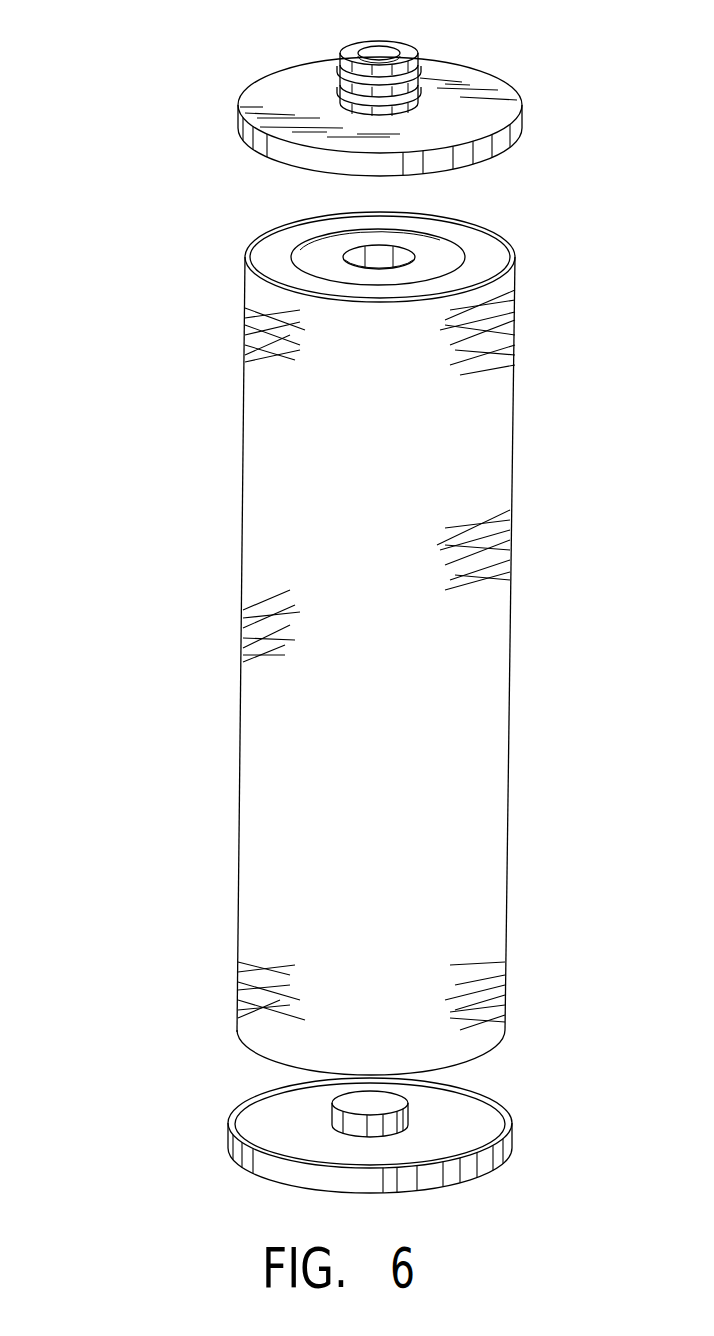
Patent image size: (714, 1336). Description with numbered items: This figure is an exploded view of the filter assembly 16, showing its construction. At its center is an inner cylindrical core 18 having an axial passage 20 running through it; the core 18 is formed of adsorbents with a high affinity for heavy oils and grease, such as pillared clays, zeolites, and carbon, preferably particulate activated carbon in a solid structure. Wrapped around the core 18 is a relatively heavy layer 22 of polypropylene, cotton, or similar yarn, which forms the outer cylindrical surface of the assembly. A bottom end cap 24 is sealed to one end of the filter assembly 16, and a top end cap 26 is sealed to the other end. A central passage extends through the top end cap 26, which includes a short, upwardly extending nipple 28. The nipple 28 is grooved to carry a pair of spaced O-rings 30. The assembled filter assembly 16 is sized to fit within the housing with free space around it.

The filter assembly 16 is at (133, 35).
The inner cylindrical core 18 is at (440, 253).
The axial passage 20 is at (345, 258).
The layer 22 is at (510, 452).
The bottom end cap 24 is at (513, 1135).
The top end cap 26 is at (523, 117).
The nipple 28 is at (421, 62).
The O-rings 30 is at (418, 88).